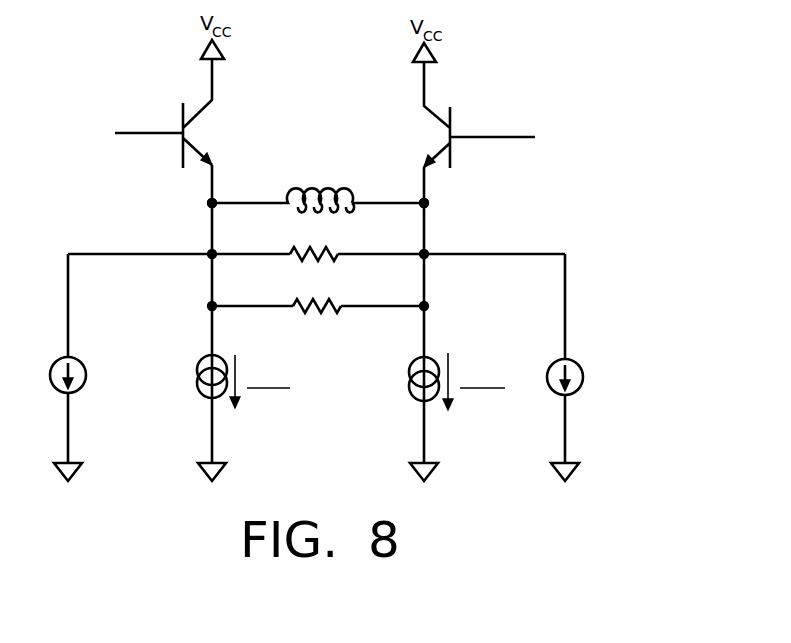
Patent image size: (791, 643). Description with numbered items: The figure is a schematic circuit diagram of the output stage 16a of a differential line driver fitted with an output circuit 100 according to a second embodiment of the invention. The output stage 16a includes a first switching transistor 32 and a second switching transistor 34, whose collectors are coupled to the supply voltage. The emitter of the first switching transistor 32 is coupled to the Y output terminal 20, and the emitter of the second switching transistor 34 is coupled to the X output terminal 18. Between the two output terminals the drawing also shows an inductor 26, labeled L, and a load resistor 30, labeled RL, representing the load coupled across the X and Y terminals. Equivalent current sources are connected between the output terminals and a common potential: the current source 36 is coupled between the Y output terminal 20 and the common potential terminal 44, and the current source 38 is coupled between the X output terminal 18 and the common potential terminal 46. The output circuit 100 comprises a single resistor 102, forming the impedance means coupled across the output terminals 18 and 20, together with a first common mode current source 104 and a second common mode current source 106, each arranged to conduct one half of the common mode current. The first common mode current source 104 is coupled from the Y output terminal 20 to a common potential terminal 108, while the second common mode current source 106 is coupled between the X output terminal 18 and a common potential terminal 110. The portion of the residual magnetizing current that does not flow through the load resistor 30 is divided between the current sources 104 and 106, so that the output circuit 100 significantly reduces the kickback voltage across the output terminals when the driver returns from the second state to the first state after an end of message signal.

The output stage 16a is at (505, 82).
The X output terminal 18 is at (427, 208).
The Y output terminal 20 is at (208, 207).
The inductor L 26 is at (300, 200).
The load resistor RL 30 is at (310, 248).
The first switching transistor 32 is at (170, 120).
The second switching transistor 34 is at (472, 127).
The current source 36 is at (58, 392).
The current source 38 is at (568, 397).
The common potential terminal 44 is at (202, 50).
The common potential terminal 46 is at (438, 53).
The output circuit 100 is at (327, 358).
The resistor 102 is at (313, 297).
The first common mode current source 104 is at (198, 397).
The second common mode current source 106 is at (412, 405).
The common potential terminal 108 is at (222, 470).
The common potential terminal 110 is at (434, 470).